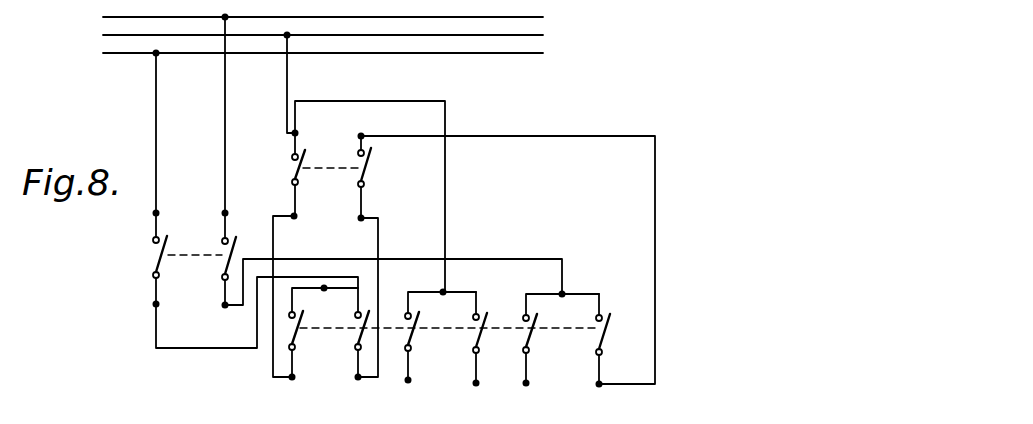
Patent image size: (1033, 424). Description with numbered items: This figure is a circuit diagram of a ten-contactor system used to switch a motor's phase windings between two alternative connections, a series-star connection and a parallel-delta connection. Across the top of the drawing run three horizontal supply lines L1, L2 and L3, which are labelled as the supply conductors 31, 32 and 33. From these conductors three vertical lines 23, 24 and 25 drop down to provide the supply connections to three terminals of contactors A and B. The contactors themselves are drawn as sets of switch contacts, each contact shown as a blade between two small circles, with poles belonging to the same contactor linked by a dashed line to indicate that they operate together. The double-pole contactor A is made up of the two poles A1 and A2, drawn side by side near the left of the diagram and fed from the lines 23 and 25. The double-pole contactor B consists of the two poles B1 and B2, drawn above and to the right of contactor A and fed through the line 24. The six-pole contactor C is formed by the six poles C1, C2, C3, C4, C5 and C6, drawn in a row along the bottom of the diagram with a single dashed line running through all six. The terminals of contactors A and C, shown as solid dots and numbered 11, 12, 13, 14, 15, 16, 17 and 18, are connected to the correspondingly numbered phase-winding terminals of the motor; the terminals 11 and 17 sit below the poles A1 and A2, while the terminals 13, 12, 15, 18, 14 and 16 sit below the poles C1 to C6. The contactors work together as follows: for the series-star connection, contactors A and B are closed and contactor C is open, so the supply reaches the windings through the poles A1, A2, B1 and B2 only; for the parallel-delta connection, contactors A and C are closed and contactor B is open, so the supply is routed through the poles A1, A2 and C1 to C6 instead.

The supply line L1 is at (330, 70).
The supply line L2 is at (338, 42).
The supply line L3 is at (331, 11).
The conductor 31 is at (339, 53).
The conductor 32 is at (402, 35).
The conductor 33 is at (458, 17).
The line 23 is at (156, 102).
The line 24 is at (286, 101).
The line 25 is at (224, 102).
The double-pole contactor pole A1 is at (157, 258).
The double-pole contactor pole A2 is at (222, 262).
The double-pole contactor pole B1 is at (301, 180).
The double-pole contactor pole B2 is at (367, 182).
The six-pole contactor pole C1 is at (298, 330).
The six-pole contactor pole C2 is at (356, 336).
The six-pole contactor pole C3 is at (414, 333).
The six-pole contactor pole C4 is at (482, 335).
The six-pole contactor pole C5 is at (532, 336).
The six-pole contactor pole C6 is at (605, 338).
The contactor terminal 11 is at (244, 312).
The contactor terminal 12 is at (360, 392).
The contactor terminal 13 is at (289, 392).
The contactor terminal 14 is at (529, 398).
The contactor terminal 15 is at (409, 395).
The contactor terminal 16 is at (599, 398).
The contactor terminal 17 is at (378, 289).
The contactor terminal 18 is at (474, 398).